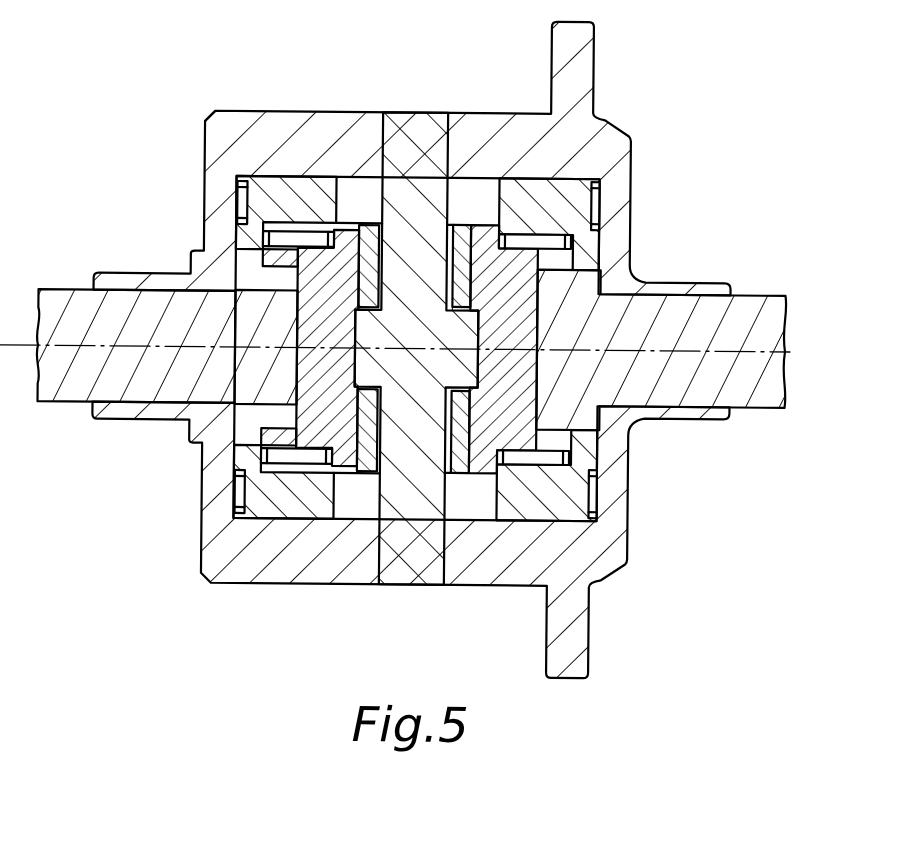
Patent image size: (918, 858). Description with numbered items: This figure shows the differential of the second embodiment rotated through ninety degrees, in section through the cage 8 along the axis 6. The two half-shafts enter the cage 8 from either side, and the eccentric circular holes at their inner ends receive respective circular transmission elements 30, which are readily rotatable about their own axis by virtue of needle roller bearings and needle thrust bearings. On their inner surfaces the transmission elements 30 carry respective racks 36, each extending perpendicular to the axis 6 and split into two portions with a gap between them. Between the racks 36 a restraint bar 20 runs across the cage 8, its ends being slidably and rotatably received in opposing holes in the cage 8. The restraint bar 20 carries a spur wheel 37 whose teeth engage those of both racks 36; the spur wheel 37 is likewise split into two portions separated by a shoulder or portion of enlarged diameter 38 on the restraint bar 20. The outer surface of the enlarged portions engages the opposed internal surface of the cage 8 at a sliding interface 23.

The axis 6 is at (790, 352).
The cage 8 is at (505, 133).
The restraint bar 20 is at (400, 570).
The sliding interface 23 is at (573, 527).
The circular transmission element 30 is at (358, 304).
The rack 36 is at (295, 258).
The spur wheel 37 is at (463, 226).
The shoulder or portion of enlarged diameter 38 is at (468, 323).